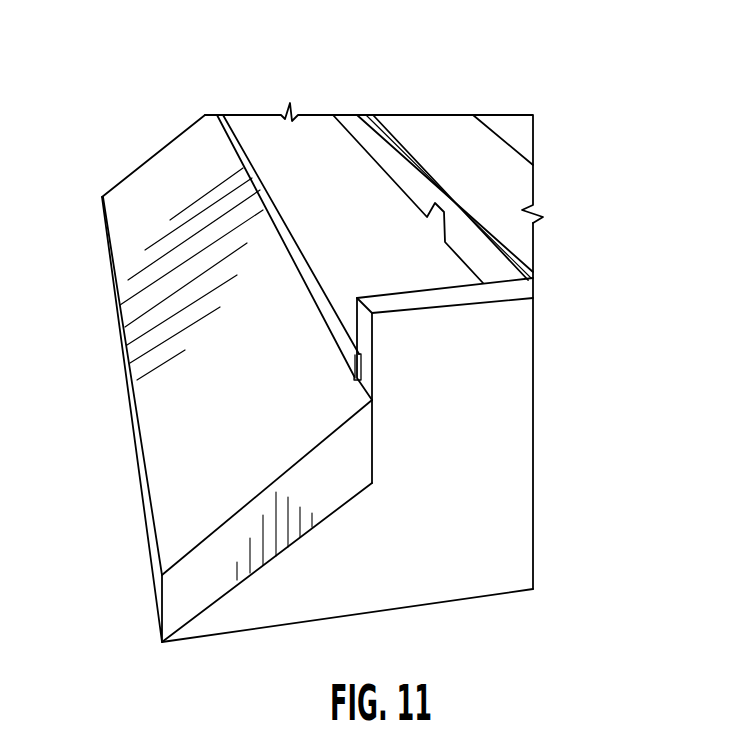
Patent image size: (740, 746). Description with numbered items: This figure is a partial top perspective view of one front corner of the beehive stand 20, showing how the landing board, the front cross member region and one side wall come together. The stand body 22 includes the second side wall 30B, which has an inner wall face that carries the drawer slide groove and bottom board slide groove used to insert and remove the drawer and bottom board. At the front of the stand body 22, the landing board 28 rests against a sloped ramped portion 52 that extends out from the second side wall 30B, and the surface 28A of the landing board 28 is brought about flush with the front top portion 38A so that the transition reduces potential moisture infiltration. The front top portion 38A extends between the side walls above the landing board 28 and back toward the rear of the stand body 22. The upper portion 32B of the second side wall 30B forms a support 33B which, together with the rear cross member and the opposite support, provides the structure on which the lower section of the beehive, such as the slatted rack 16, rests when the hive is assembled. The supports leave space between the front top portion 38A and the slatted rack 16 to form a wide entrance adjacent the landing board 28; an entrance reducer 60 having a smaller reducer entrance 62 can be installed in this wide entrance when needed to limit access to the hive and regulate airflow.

The beehive stand 20 is at (259, 86).
The slatted rack 16 is at (513, 183).
The stand body 22 is at (530, 484).
The landing board 28 is at (170, 198).
The surface of the landing board 28A is at (170, 448).
The front top portion 38A is at (322, 170).
The entrance reducer 60 is at (415, 190).
The reducer entrance 62 is at (440, 205).
The upper portion of the second side wall 32B is at (523, 287).
The support 33B is at (492, 302).
The second side wall 30B is at (525, 358).
The sloped ramped portion 52 is at (323, 565).